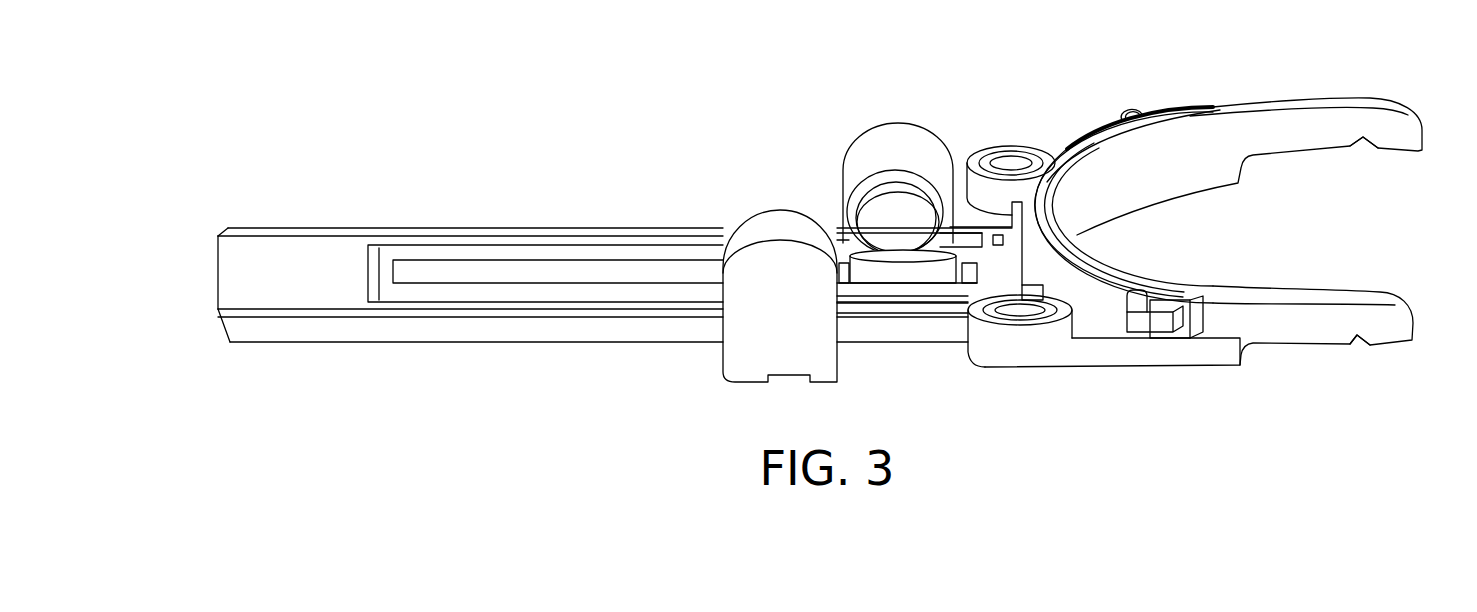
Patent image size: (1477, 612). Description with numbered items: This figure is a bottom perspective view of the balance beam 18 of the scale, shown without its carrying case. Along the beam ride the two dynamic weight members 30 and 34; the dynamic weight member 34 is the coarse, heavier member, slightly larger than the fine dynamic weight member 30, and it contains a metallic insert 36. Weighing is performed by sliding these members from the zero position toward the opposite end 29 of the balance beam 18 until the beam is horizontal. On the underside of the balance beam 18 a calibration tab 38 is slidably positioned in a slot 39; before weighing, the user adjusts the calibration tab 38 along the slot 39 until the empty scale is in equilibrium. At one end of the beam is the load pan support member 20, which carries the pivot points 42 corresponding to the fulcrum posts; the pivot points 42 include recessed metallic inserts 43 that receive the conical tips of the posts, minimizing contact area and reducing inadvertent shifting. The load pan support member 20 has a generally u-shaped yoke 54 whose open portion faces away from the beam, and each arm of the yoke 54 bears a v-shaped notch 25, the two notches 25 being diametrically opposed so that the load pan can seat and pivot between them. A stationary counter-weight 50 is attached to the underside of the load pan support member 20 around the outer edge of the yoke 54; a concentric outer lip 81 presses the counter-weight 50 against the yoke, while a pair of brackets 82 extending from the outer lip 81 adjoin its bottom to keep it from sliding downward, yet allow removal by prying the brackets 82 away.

The balance beam 18 is at (240, 252).
The load pan support member 20 is at (1338, 98).
The v-shaped notch 25 is at (1362, 140).
The opposite end of the balance beam 29 is at (218, 282).
The dynamic weight member 30 is at (718, 367).
The dynamic weight member 34 is at (866, 137).
The metallic insert 36 is at (868, 230).
The calibration tab 38 is at (887, 277).
The slot 39 is at (572, 270).
The pivot point 42 is at (1018, 170).
The recessed metallic insert 43 is at (1017, 163).
The stationary counter-weight 50 is at (1180, 297).
The u-shaped yoke 54 is at (1408, 307).
The outer lip 81 is at (1152, 330).
The bracket 82 is at (1138, 113).